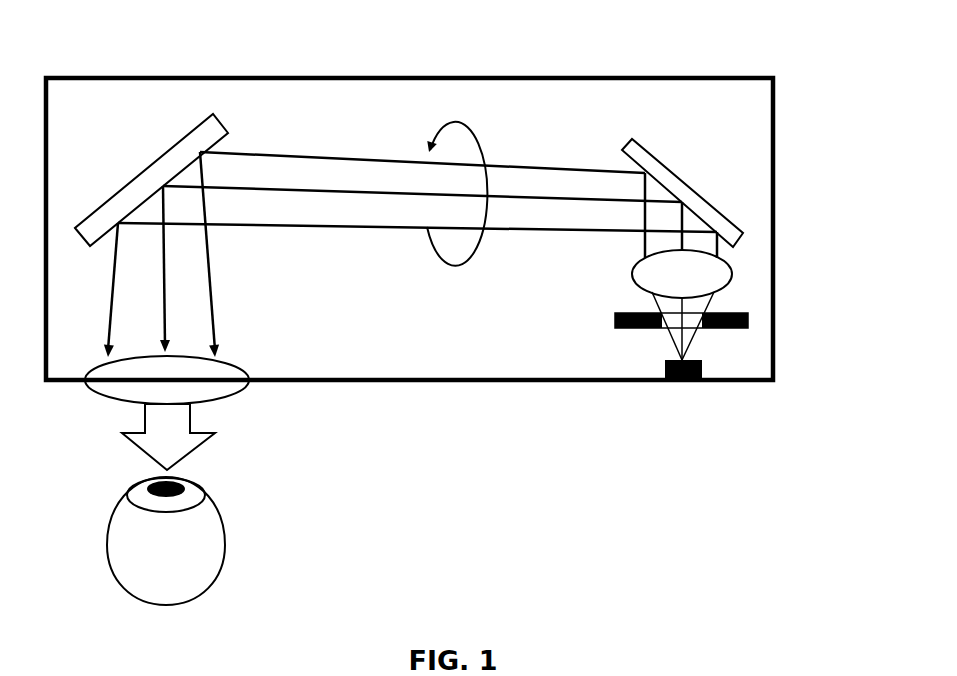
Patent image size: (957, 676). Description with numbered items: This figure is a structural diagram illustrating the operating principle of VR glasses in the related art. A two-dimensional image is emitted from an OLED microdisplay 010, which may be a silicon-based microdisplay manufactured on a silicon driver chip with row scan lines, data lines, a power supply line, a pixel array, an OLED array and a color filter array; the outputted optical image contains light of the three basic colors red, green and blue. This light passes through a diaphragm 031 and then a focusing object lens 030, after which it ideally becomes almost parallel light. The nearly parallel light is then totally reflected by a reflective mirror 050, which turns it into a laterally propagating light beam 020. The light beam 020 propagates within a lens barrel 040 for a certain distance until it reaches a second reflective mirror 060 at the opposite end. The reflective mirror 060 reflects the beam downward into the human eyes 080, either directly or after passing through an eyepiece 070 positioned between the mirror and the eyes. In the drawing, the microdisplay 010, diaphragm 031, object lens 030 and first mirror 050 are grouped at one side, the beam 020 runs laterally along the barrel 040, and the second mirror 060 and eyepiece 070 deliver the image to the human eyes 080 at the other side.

The OLED microdisplay 010 is at (665, 368).
The light beam 020 is at (456, 272).
The focusing object lens 030 is at (600, 283).
The diaphragm 031 is at (749, 320).
The lens barrel 040 is at (411, 75).
The reflective mirror 050 is at (622, 148).
The second reflective mirror 060 is at (227, 120).
The eyepiece 070 is at (223, 398).
The human eyes 080 is at (225, 542).